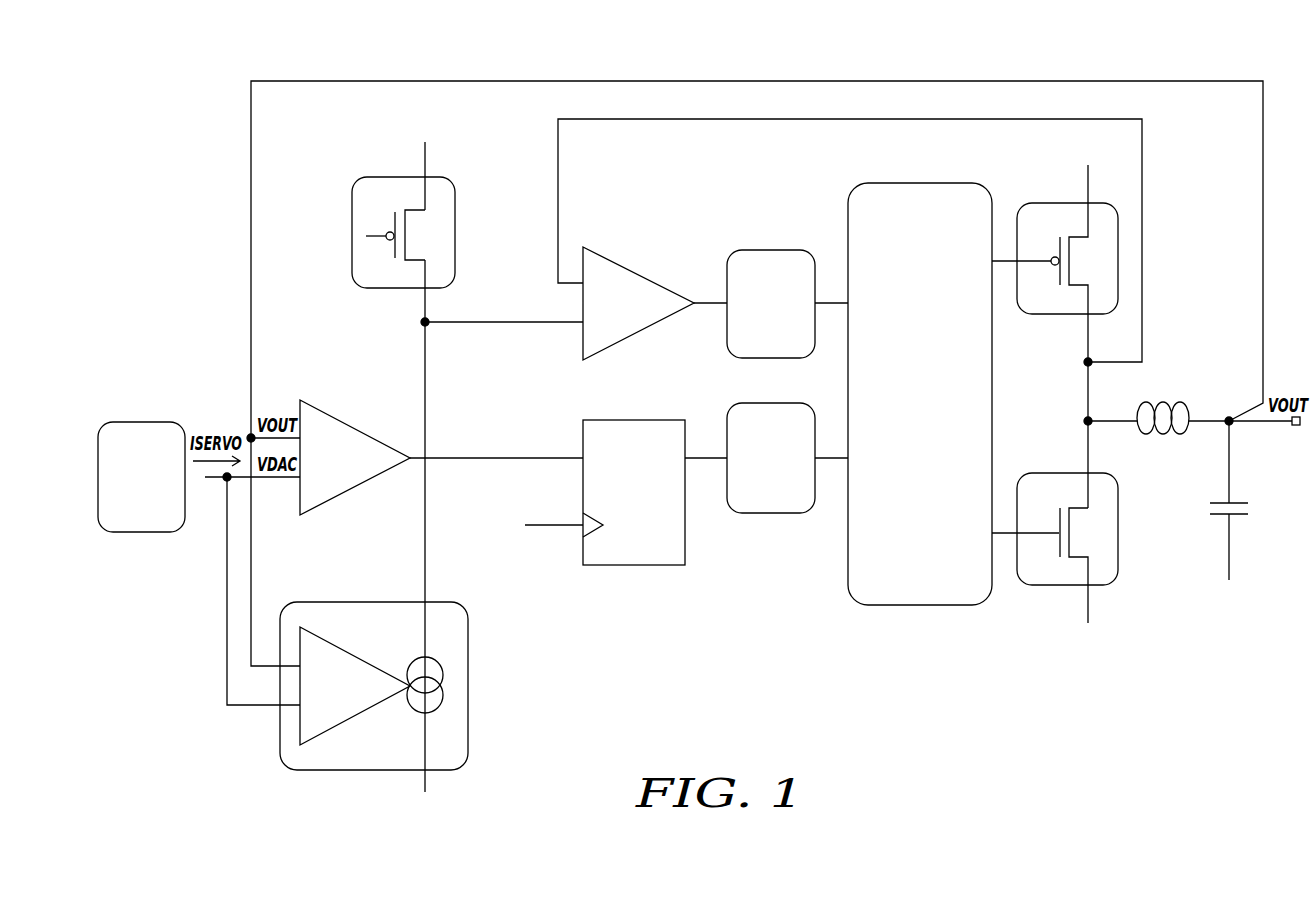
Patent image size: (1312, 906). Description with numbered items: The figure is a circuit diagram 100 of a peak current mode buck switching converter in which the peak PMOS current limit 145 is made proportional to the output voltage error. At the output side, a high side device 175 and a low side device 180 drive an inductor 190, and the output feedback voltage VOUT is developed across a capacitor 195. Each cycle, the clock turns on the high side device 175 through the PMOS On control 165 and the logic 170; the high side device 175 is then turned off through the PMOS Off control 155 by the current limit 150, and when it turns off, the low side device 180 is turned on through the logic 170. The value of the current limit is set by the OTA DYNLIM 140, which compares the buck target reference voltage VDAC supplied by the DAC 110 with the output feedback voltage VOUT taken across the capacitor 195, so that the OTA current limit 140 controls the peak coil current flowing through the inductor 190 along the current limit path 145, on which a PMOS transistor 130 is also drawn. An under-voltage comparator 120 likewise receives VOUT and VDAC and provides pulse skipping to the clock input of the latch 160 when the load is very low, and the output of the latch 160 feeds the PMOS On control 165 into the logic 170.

The circuit diagram 100 is at (703, 45).
The DAC 110 is at (151, 421).
The under-voltage comparator 120 is at (330, 410).
The PMOS transistor 130 is at (405, 177).
The OTA DYNLIM 140 is at (347, 601).
The peak PMOS current limit 145 is at (426, 570).
The current limit 150 is at (620, 263).
The control 155 is at (783, 249).
The latch 160 is at (634, 419).
The control 165 is at (784, 403).
The logic 170 is at (904, 182).
The high side device 175 is at (1068, 202).
The low side device 180 is at (1070, 472).
The inductor 190 is at (1152, 402).
The capacitor 195 is at (1238, 503).